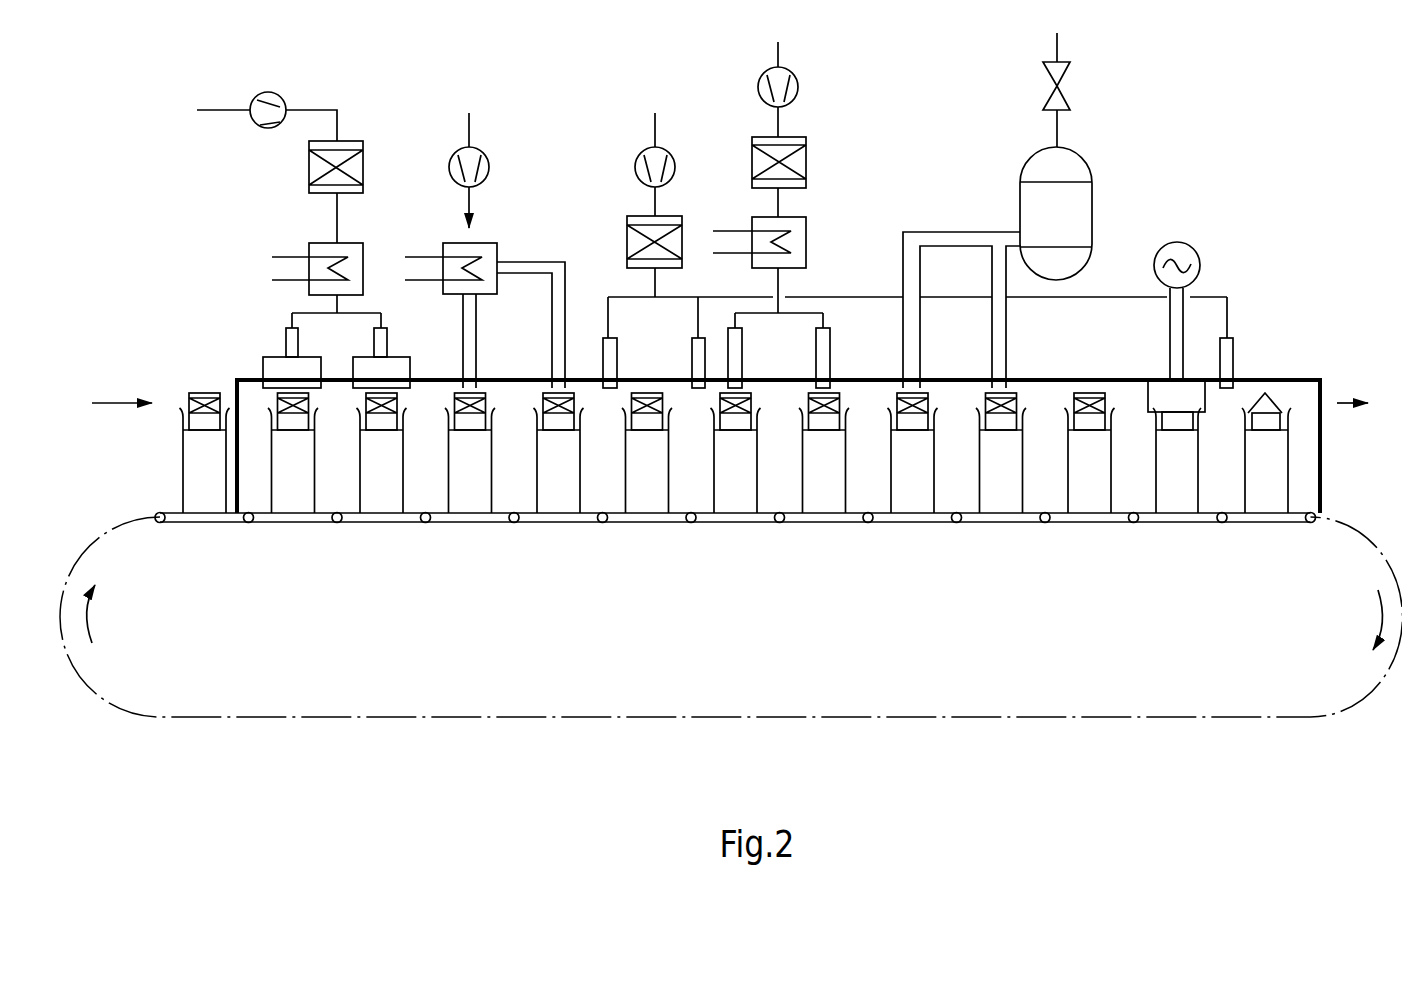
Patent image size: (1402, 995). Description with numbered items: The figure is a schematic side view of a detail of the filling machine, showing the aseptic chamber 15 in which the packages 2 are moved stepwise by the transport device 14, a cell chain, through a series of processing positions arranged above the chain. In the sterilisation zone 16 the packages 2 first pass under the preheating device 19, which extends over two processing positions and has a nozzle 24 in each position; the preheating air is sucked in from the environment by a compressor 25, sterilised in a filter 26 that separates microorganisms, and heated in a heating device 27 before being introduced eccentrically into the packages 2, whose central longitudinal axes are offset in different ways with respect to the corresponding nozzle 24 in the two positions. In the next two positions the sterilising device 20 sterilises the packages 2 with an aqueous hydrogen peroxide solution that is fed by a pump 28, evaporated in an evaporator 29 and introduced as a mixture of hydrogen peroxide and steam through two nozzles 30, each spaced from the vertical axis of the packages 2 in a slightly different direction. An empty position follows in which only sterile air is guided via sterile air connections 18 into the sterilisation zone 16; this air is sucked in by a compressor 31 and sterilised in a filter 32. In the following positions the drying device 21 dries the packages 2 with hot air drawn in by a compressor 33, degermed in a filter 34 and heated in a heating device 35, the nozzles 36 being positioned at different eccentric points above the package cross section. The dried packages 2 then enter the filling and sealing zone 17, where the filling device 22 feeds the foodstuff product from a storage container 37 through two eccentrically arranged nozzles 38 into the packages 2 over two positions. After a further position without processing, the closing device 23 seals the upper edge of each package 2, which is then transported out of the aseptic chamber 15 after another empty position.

The package 2 is at (200, 421).
The transport device 14 is at (171, 522).
The aseptic chamber 15 is at (706, 672).
The sterilisation zone 16 is at (570, 672).
The filling and sealing zone 17 is at (1019, 672).
The sterile air connection 18 is at (698, 357).
The preheating device 19 is at (176, 245).
The sterilising device 20 is at (434, 115).
The drying device 21 is at (722, 98).
The filling device 22 is at (943, 98).
The closing device 23 is at (1228, 232).
The nozzle 24 is at (375, 367).
The compressor 25 is at (264, 128).
The filter 26 is at (344, 155).
The heating device 27 is at (320, 250).
The pump 28 is at (488, 166).
The evaporator 29 is at (484, 250).
The nozzle 30 is at (557, 338).
The compressor 31 is at (641, 167).
The filter 32 is at (640, 240).
The compressor 33 is at (797, 87).
The filter 34 is at (790, 164).
The heating device 35 is at (796, 240).
The nozzle 36 is at (818, 358).
The storage container 37 is at (1075, 212).
The nozzle 38 is at (997, 358).